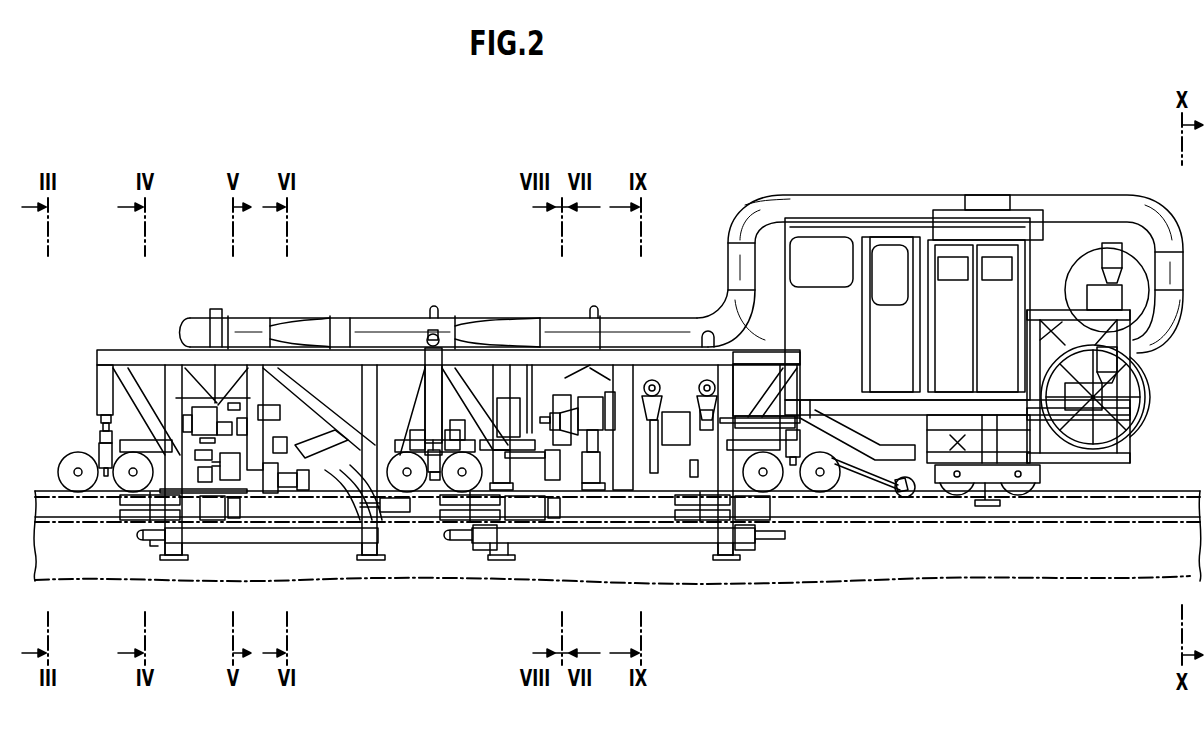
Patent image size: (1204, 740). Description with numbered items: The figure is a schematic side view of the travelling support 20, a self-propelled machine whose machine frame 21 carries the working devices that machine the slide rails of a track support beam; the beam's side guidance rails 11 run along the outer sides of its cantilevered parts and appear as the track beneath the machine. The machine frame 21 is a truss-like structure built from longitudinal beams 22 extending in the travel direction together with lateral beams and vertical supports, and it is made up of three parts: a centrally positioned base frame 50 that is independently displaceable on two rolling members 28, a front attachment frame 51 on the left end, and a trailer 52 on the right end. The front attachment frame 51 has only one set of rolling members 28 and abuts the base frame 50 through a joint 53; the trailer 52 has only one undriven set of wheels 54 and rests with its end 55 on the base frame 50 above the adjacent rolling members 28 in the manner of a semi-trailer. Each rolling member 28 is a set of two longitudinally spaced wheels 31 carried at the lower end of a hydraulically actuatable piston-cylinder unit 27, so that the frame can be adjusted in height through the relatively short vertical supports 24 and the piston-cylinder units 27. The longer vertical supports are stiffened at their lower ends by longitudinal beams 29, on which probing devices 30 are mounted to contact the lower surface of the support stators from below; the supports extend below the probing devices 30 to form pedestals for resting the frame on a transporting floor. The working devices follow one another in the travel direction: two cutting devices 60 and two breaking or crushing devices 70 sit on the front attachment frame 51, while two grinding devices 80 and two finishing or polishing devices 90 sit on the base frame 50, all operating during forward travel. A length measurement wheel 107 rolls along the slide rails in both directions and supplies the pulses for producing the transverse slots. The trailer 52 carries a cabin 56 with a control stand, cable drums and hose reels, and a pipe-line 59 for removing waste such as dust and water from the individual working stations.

The side guidance rails 11 is at (885, 512).
The travelling support 20 is at (362, 216).
The machine frame 21 is at (478, 355).
The longitudinal beams 22 is at (338, 357).
The vertical supports 24 is at (99, 382).
The piston-cylinder units 27 is at (103, 428).
The rolling members 28 is at (93, 458).
The longitudinal beams 29 is at (318, 534).
The probing devices 30 is at (213, 548).
The wheels 31 is at (127, 486).
The base frame 50 is at (641, 347).
The front attachment frame 51 is at (142, 352).
The trailer 52 is at (1006, 198).
The joint 53 is at (433, 338).
The set of wheels 54 is at (1016, 492).
The end of the trailer 55 is at (808, 402).
The cabin 56 is at (815, 232).
The pipe-line 59 is at (957, 271).
The cutting devices 60 is at (196, 398).
The breaking or crushing devices 70 is at (287, 470).
The grinding devices 80 is at (536, 408).
The finishing or polishing devices 90 is at (592, 373).
The length measurement wheel 107 is at (908, 497).